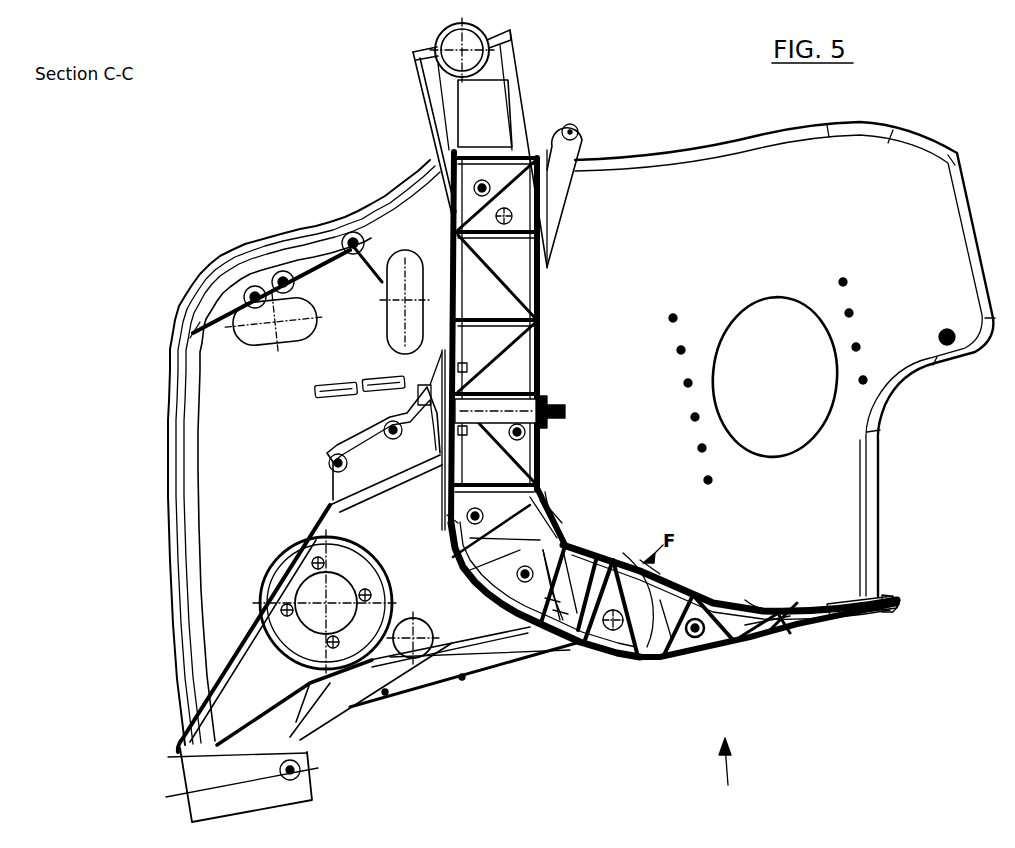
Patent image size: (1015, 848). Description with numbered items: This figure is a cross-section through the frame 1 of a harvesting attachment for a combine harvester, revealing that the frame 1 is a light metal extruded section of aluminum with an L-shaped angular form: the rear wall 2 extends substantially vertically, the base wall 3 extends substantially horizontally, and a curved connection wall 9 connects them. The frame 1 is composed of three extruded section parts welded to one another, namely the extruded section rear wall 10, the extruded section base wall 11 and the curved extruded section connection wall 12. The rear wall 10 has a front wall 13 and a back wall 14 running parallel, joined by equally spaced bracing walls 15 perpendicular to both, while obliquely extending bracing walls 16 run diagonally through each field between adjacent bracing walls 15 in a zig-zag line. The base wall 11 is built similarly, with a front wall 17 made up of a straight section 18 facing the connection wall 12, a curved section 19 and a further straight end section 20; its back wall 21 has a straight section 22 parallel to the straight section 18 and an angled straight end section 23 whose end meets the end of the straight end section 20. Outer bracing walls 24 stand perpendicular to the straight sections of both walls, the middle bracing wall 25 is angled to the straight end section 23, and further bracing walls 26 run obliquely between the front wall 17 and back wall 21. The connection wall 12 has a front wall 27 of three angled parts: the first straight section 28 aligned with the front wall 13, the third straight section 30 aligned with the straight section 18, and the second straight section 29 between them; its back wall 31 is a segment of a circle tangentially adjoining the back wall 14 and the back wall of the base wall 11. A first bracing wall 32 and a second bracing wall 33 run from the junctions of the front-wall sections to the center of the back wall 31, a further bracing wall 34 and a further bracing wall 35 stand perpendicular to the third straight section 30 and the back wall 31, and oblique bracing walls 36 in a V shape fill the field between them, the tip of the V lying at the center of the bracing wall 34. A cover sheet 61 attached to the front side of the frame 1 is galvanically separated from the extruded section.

The frame 1 is at (336, 133).
The rear wall 2 is at (627, 262).
The base wall 3 is at (727, 771).
The curved connection wall 9 is at (627, 472).
The extruded section rear wall 10 is at (520, 268).
The extruded section base wall 11 is at (660, 650).
The curved extruded section connection wall 12 is at (487, 617).
The front wall 13 is at (538, 360).
The back wall 14 is at (402, 240).
The bracing walls 15 is at (497, 160).
The obliquely extending bracing walls 16 is at (520, 172).
The front wall 17 is at (690, 593).
The straight section 18 is at (655, 560).
The curved section 19 is at (751, 598).
The straight end section 20 is at (843, 603).
The back wall 21 is at (625, 650).
The straight section 22 is at (605, 640).
The straight end section 23 is at (780, 633).
The outer bracing walls 24 is at (590, 662).
The middle bracing wall 25 is at (672, 655).
The further bracing walls 26 is at (705, 585).
The front wall 27 is at (560, 512).
The first straight section 28 is at (545, 490).
The second straight section 29 is at (565, 522).
The third straight section 30 is at (595, 560).
The back wall 31 is at (443, 657).
The first bracing wall 32 is at (450, 520).
The second bracing wall 33 is at (442, 545).
The further bracing wall 34 is at (497, 593).
The further bracing wall 35 is at (600, 540).
The further bracing walls 36 is at (542, 687).
The cover sheet 61 is at (745, 600).